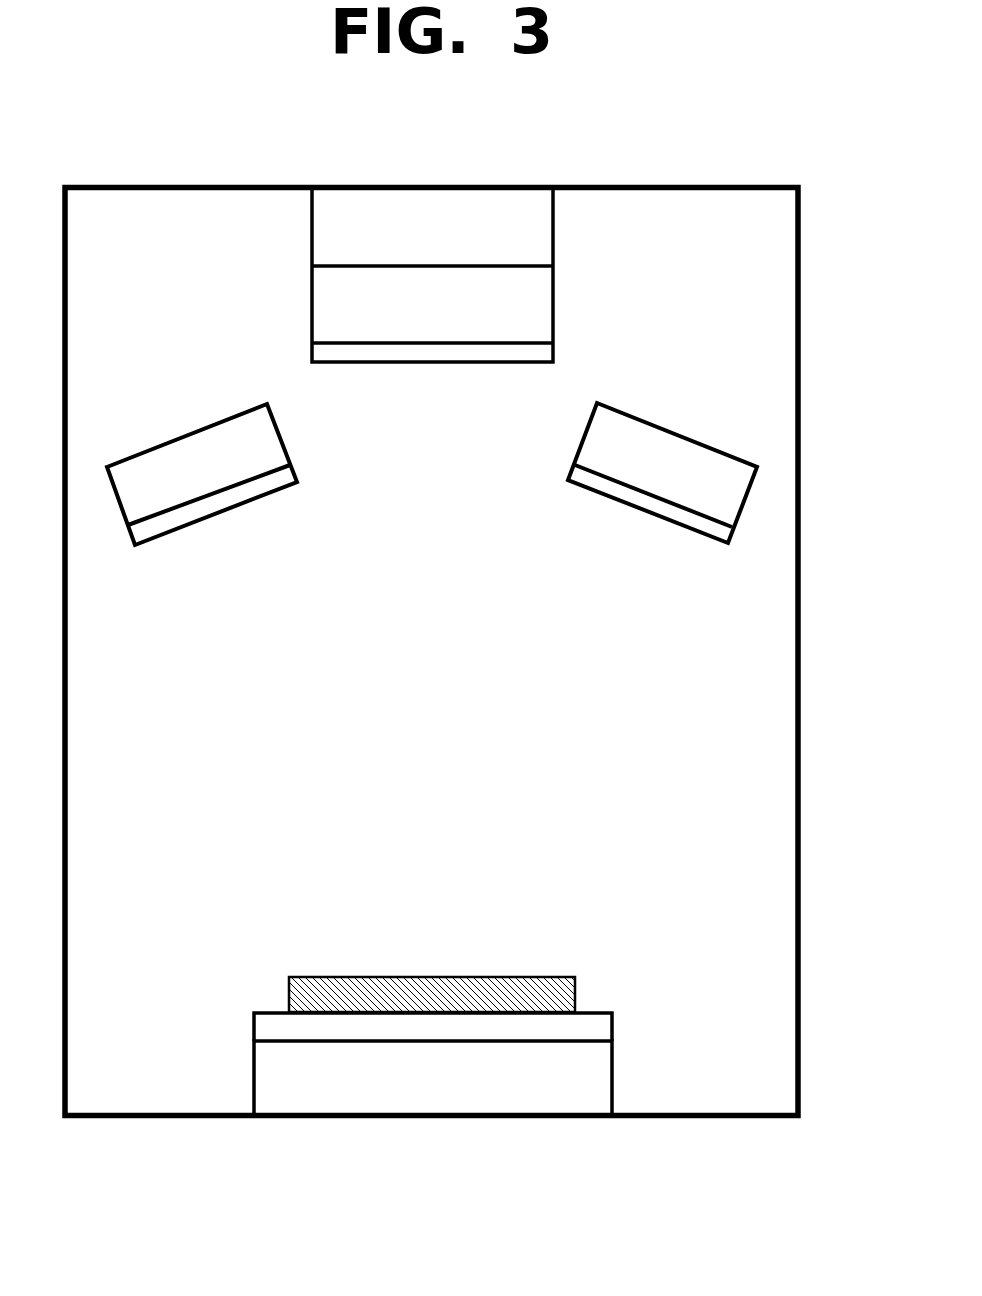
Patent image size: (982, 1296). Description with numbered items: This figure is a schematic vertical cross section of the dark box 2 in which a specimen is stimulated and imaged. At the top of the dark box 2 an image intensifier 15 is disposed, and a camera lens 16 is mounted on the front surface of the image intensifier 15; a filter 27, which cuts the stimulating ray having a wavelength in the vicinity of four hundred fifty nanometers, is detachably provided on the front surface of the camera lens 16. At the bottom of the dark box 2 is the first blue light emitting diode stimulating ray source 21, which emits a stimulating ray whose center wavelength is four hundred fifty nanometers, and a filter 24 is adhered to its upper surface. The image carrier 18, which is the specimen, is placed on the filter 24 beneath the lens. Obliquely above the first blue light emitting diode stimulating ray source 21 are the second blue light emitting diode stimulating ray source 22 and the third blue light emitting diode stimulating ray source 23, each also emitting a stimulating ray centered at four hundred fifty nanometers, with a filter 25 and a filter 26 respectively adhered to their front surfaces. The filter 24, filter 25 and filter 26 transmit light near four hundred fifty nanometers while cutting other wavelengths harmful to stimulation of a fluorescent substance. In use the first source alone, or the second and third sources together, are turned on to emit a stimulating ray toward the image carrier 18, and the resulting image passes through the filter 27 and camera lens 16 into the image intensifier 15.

The dark box 2 is at (800, 740).
The image intensifier 15 is at (339, 240).
The camera lens 16 is at (508, 305).
The filter 27 is at (440, 353).
The third blue light emitting diode stimulating ray source 23 is at (177, 452).
The filter 26 is at (210, 505).
The second blue light emitting diode stimulating ray source 22 is at (695, 450).
The filter 25 is at (660, 510).
The image carrier 18 is at (482, 988).
The filter 24 is at (588, 1025).
The first blue light emitting diode stimulating ray source 21 is at (588, 1088).